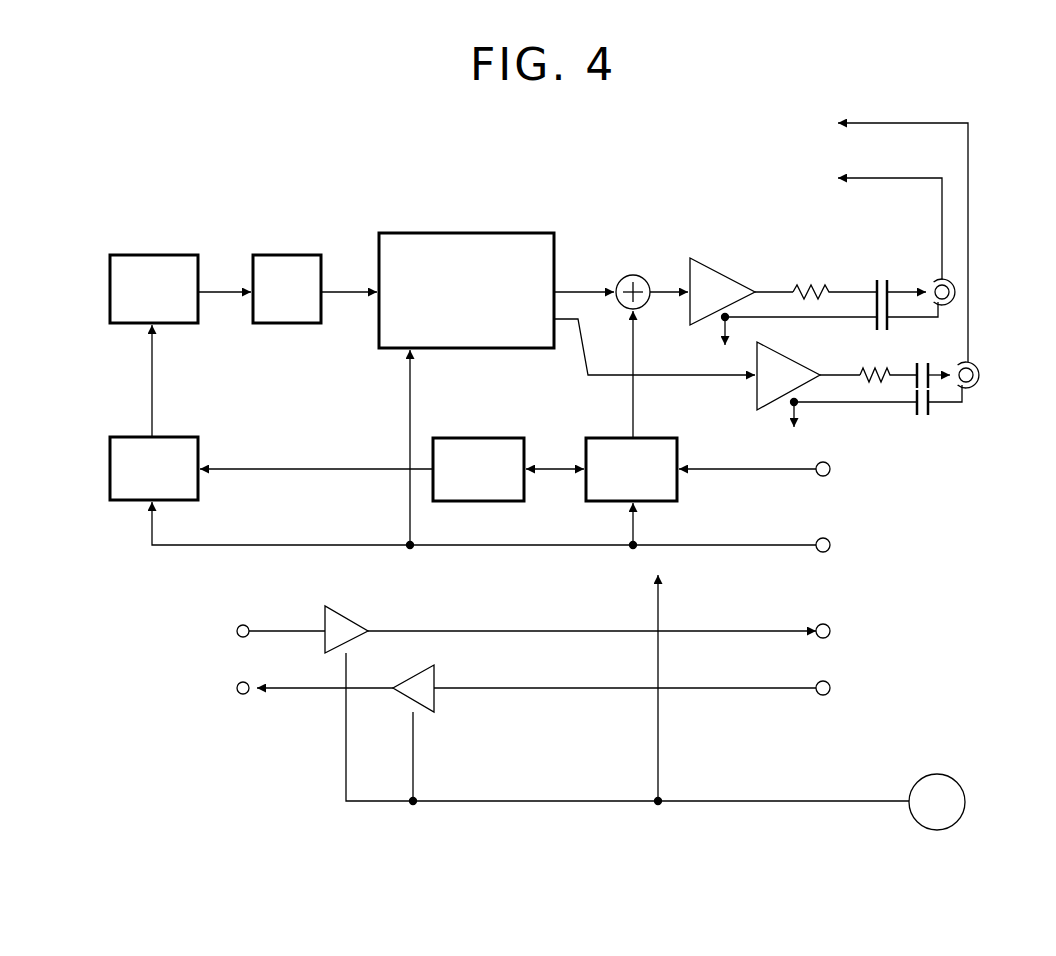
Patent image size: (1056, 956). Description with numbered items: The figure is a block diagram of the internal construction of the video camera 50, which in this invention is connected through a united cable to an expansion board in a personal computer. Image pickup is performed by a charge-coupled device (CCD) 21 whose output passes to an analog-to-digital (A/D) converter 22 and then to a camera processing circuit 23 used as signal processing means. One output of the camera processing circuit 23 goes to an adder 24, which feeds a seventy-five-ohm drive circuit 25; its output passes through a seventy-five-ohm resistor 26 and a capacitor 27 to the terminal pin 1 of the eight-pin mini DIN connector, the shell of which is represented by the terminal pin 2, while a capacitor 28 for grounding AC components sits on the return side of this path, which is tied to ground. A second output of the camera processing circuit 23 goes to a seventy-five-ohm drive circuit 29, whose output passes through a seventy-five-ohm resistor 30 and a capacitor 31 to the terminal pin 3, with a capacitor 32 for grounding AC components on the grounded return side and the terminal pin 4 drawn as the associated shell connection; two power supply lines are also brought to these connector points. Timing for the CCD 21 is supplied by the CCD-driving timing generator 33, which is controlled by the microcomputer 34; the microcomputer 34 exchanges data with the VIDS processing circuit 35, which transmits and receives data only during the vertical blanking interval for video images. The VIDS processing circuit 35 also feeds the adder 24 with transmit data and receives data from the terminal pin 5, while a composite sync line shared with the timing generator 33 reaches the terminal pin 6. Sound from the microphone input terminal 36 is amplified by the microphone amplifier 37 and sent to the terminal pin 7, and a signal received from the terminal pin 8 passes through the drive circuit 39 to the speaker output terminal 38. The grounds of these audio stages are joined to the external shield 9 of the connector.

The video camera 50 is at (541, 155).
The charge-coupled device (CCD) 21 is at (152, 255).
The analog-to-digital (A/D) converter 22 is at (287, 255).
The camera processing circuit 23 is at (436, 233).
The adder 24 is at (633, 275).
The 75Ω-drive circuit 25 is at (712, 270).
The 75Ω-resistor 26 is at (797, 289).
The capacitor 27 is at (882, 280).
The capacitor for grounding AC components 28 is at (900, 318).
The terminal pin 1 is at (950, 292).
The terminal pin 2 is at (952, 282).
The 75Ω-drive circuit 29 is at (770, 412).
The 75Ω-resistor 30 is at (856, 373).
The capacitor 31 is at (917, 400).
The capacitor for grounding AC components 32 is at (930, 415).
The terminal pin 3 is at (976, 385).
The terminal pin 4 is at (980, 375).
The CCD-driving timing generator 33 is at (192, 437).
The microcomputer 34 is at (494, 438).
The VIDS processing circuit 35 is at (678, 500).
The terminal pin 5 is at (830, 472).
The terminal pin 6 is at (830, 547).
The terminal pin 7 is at (830, 632).
The terminal pin 8 is at (830, 690).
The microphone input terminal 36 is at (250, 626).
The microphone amplifier 37 is at (362, 620).
The speaker output terminal 38 is at (250, 694).
The drive circuit 39 is at (440, 683).
The external shield 9 is at (940, 774).